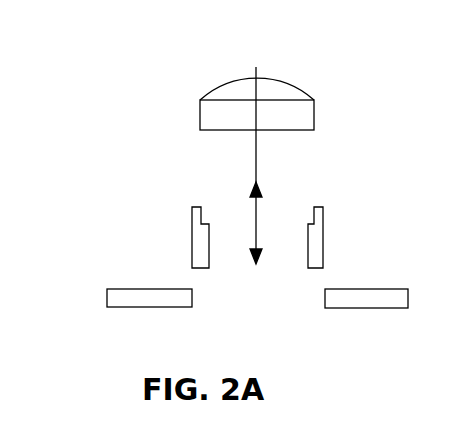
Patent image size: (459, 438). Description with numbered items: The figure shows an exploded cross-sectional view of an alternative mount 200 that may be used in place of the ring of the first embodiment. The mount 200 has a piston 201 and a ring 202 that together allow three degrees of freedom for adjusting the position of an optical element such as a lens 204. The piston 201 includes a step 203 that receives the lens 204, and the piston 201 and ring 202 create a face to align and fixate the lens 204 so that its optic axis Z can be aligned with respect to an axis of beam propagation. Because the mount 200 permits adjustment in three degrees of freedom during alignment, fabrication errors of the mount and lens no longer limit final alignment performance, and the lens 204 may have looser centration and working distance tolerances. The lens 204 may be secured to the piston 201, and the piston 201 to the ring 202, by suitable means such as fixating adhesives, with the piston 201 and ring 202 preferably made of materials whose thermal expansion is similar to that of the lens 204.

The mount 200 is at (73, 176).
The lens 204 is at (208, 92).
The optic axis Z is at (256, 158).
The step 203 is at (310, 227).
The piston 201 is at (322, 237).
The ring 202 is at (120, 290).